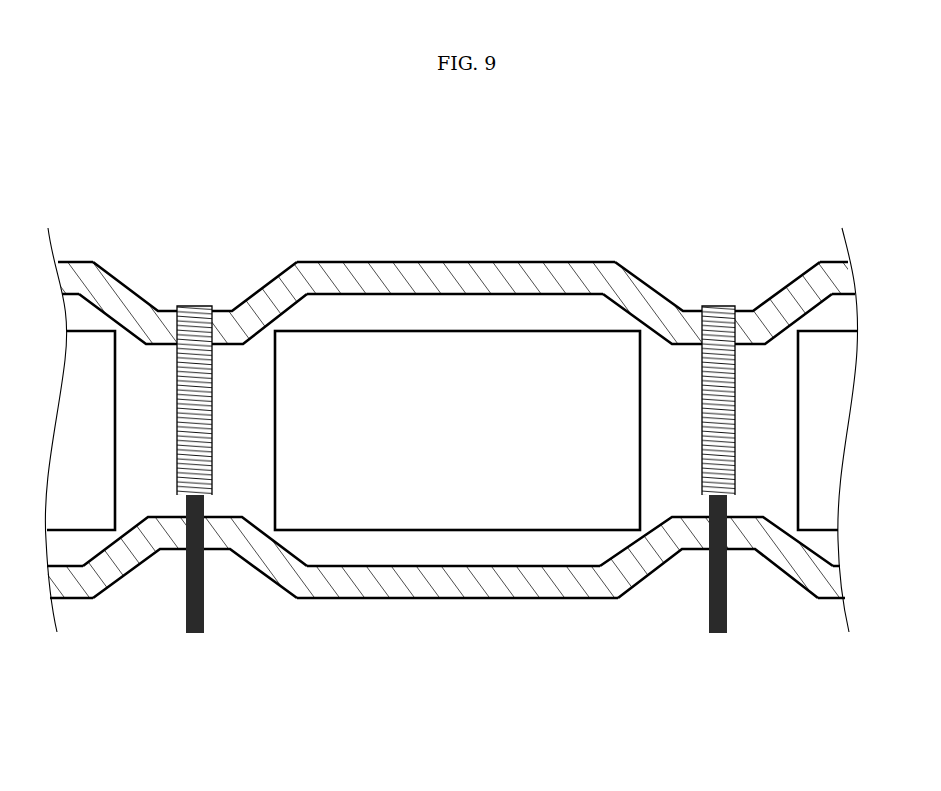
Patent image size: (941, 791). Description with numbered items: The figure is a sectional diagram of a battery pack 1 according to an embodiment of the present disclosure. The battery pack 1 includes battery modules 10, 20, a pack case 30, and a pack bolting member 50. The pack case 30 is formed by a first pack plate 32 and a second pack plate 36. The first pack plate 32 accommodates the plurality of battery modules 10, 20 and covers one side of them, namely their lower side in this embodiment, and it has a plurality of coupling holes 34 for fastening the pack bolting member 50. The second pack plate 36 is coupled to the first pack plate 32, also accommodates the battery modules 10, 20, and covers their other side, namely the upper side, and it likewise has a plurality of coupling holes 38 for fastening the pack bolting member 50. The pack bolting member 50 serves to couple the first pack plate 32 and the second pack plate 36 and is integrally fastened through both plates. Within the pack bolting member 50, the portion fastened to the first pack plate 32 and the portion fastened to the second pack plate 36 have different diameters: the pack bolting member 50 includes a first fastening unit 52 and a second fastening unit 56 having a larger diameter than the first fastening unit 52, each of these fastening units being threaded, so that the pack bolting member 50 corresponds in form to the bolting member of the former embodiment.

The battery pack 1 is at (104, 171).
The battery module 10 is at (84, 342).
The battery module 20 is at (494, 378).
The pack case 30 is at (475, 467).
The first pack plate 32 is at (472, 557).
The coupling hole 34 is at (728, 537).
The second pack plate 36 is at (481, 303).
The coupling hole 38 is at (733, 328).
The pack bolting member 50 is at (540, 429).
The first fastening unit 52 is at (728, 600).
The second fastening unit 56 is at (733, 375).